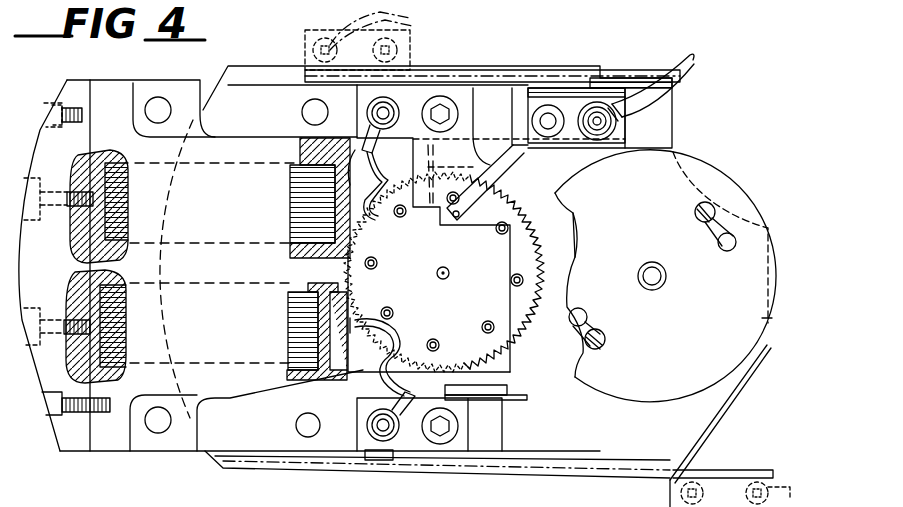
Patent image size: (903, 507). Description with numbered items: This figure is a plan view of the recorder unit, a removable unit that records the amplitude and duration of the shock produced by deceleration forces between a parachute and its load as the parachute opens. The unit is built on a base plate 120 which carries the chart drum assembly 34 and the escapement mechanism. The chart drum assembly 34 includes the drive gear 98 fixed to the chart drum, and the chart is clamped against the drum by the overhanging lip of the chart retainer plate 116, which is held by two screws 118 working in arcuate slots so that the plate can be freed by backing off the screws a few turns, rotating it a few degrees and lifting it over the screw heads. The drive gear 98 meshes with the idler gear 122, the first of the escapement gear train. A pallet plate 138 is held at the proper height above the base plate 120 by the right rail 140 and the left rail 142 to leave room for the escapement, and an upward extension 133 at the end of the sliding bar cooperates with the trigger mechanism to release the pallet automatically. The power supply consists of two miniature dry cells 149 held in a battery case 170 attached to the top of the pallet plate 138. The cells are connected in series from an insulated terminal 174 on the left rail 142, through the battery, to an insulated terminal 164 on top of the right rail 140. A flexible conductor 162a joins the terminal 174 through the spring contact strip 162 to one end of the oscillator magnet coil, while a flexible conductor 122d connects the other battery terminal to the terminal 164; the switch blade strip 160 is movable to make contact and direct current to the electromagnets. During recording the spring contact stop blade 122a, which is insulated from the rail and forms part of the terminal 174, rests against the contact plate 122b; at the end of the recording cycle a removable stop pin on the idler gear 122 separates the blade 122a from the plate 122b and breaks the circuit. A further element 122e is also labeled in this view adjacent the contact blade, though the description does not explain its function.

The chart drum assembly 34 is at (740, 165).
The drive gear 98 is at (578, 262).
The chart retainer plate 116 is at (766, 323).
The screws 118 is at (696, 216).
The base plate 120 is at (706, 430).
The idler gear 122 is at (488, 235).
The spring contact stop blade 122a is at (503, 192).
The contact plate 122b is at (398, 222).
The flexible conductor 122d is at (398, 320).
The spring bracket 122e is at (372, 158).
The upward extension 133 is at (524, 397).
The pallet plate 138 is at (503, 388).
The right rail 140 is at (500, 441).
The left rail 142 is at (676, 124).
The miniature dry cells 149 is at (205, 252).
The switch blade strip 160 is at (460, 473).
The spring contact strip 162 is at (514, 74).
The flexible conductor 162a is at (318, 17).
The insulated terminal 164 is at (368, 462).
The battery case 170 is at (57, 448).
The insulated terminal 174 is at (603, 75).